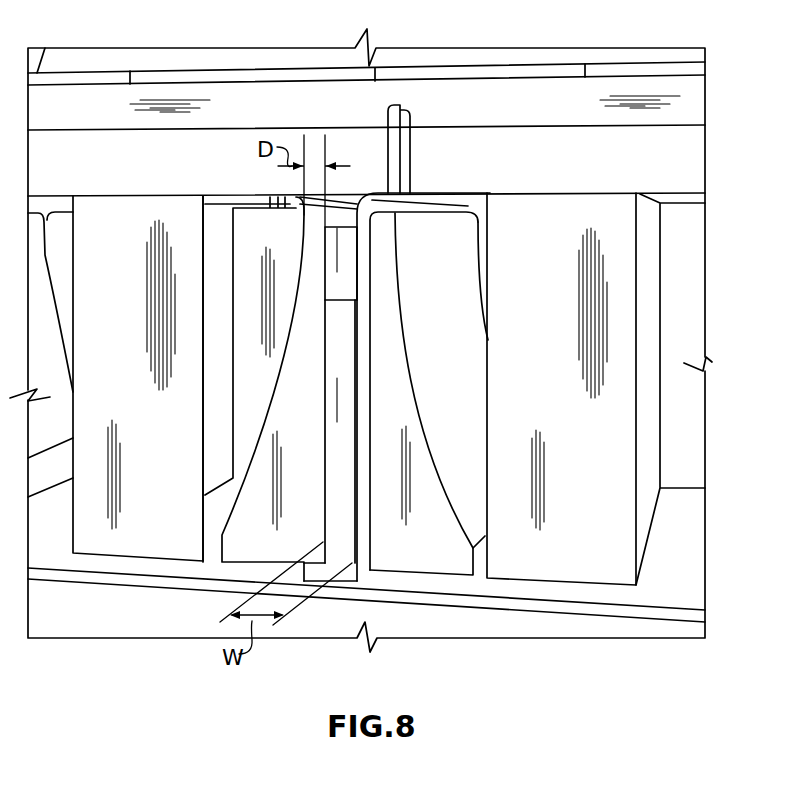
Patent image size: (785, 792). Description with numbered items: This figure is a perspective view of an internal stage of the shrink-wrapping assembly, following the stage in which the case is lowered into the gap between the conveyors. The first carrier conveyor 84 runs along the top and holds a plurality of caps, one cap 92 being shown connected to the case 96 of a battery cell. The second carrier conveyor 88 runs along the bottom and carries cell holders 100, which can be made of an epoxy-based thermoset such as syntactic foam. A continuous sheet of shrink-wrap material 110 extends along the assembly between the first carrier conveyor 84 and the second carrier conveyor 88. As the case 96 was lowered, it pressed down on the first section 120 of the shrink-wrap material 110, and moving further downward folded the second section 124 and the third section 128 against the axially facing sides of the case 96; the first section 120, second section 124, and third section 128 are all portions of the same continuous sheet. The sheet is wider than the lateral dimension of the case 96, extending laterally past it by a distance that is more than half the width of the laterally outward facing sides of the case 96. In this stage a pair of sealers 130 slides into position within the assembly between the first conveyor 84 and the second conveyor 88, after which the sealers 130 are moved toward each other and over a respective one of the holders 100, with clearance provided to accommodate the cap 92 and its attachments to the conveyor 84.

The first carrier conveyor 84 is at (449, 72).
The sheet of shrink-wrap material 110 is at (681, 193).
The cap 92 is at (350, 250).
The case 96 is at (388, 405).
The third section 128 is at (312, 530).
The second section 124 is at (360, 540).
The cell holder 100 is at (453, 543).
The sealer 130 is at (605, 530).
The first section 120 is at (348, 575).
The second carrier conveyor 88 is at (428, 598).